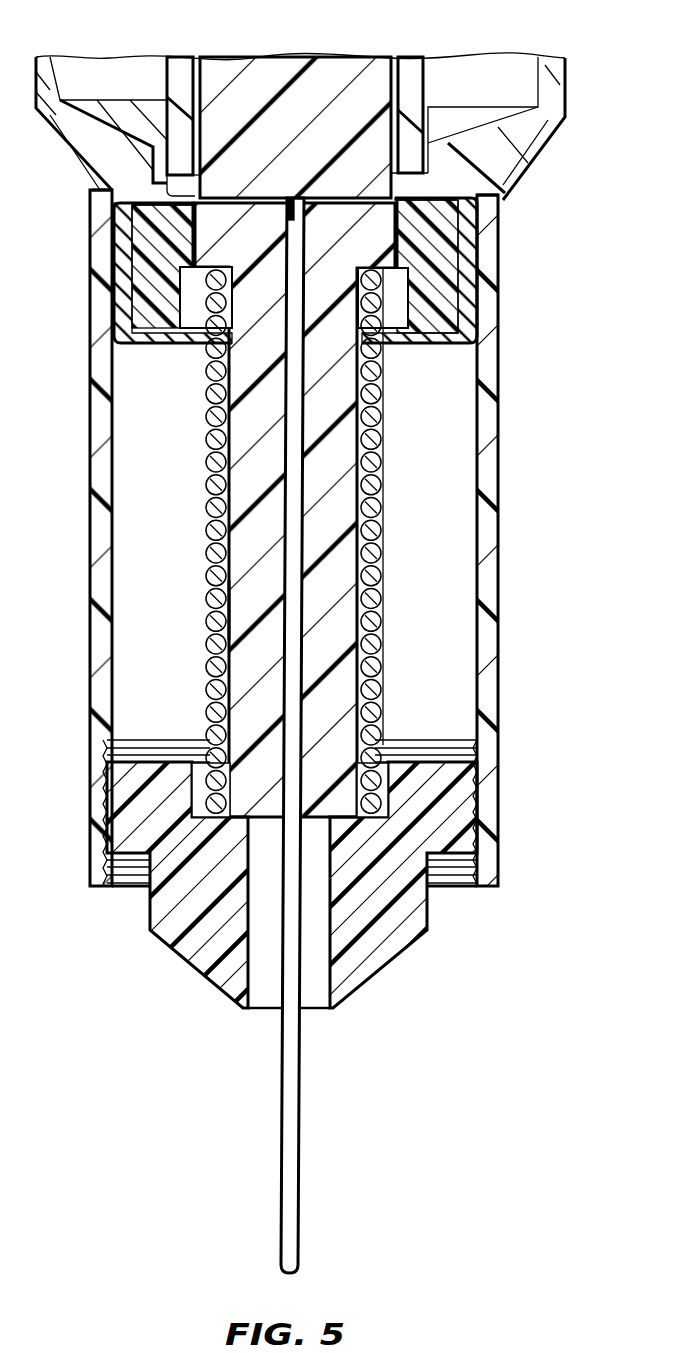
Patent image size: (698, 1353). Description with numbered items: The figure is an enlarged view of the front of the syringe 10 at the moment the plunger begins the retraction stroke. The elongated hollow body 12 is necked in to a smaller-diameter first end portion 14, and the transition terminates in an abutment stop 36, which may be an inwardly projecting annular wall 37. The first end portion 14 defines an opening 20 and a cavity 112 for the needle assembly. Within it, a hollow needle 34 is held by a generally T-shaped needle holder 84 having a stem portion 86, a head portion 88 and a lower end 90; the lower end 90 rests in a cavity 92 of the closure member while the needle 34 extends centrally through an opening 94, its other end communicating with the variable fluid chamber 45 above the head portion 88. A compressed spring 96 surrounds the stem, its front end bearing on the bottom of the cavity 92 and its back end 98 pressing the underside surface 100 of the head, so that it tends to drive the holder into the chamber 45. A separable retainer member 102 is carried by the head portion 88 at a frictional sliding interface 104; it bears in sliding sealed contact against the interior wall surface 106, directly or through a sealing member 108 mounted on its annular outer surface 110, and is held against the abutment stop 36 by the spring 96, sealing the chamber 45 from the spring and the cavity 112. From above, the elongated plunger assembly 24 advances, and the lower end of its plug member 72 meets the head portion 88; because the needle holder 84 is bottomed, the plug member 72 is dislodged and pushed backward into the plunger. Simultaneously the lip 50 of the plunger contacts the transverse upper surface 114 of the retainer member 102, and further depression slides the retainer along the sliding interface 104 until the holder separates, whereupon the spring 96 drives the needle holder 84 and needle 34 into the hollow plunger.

The syringe 10 is at (262, 42).
The elongated hollow body 12 is at (4, 391).
The first end portion 14 is at (90, 483).
The opening 20 is at (118, 862).
The elongated plunger assembly 24 is at (4, 963).
The needle 34 is at (281, 1175).
The abutment stop 36 is at (92, 193).
The inwardly projecting annular wall 37 is at (505, 130).
The variable fluid chamber 45 is at (136, 118).
The lip 50 is at (72, 150).
The plug member 72 is at (322, 113).
The needle holder 84 is at (322, 693).
The stem portion 86 is at (220, 606).
The head portion 88 is at (340, 212).
The lower end 90 is at (334, 830).
The cavity 92 is at (198, 788).
The opening 94 is at (262, 1016).
The compressed spring 96 is at (206, 525).
The back end 98 is at (357, 300).
The underside surface 100 is at (229, 288).
The retainer member 102 is at (477, 283).
The sliding interface 104 is at (198, 240).
The interior wall surface 106 is at (132, 284).
The sealing member 108 is at (122, 246).
The annular outer surface 110 is at (114, 212).
The cavity 112 is at (440, 541).
The transverse upper surface 114 is at (210, 183).